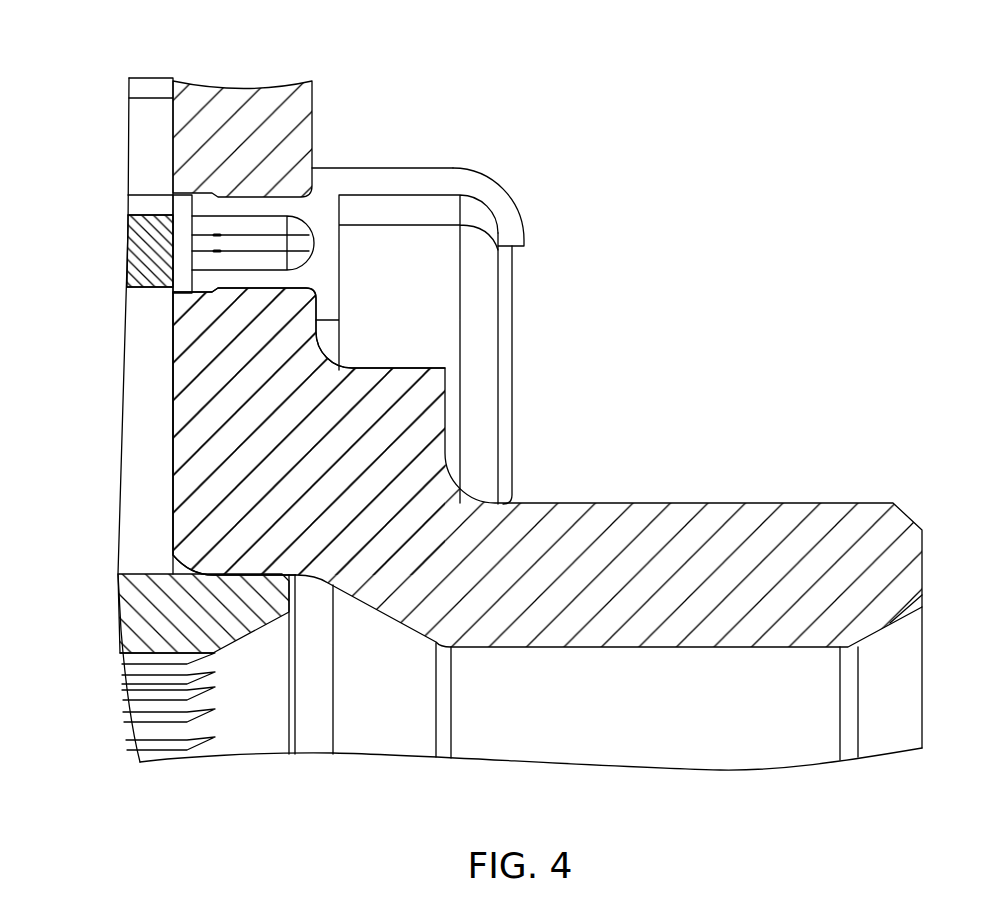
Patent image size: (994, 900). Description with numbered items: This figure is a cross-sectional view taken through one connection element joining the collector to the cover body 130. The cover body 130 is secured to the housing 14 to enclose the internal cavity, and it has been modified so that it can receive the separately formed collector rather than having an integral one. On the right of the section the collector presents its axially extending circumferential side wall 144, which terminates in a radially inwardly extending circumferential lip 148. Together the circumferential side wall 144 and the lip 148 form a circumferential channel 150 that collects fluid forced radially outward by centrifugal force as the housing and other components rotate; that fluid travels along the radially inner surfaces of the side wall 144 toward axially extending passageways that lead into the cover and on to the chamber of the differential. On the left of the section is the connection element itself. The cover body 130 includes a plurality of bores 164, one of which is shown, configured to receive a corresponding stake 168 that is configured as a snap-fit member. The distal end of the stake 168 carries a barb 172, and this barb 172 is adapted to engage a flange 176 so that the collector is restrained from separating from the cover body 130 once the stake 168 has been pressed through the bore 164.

The housing 14 is at (134, 133).
The cover body 130 is at (790, 479).
The circumferential side wall 144 is at (426, 143).
The circumferential lip 148 is at (542, 214).
The circumferential channel 150 is at (451, 274).
The bore 164 is at (164, 252).
The stake 168 is at (285, 170).
The barb 172 is at (176, 204).
The flange 176 is at (200, 312).